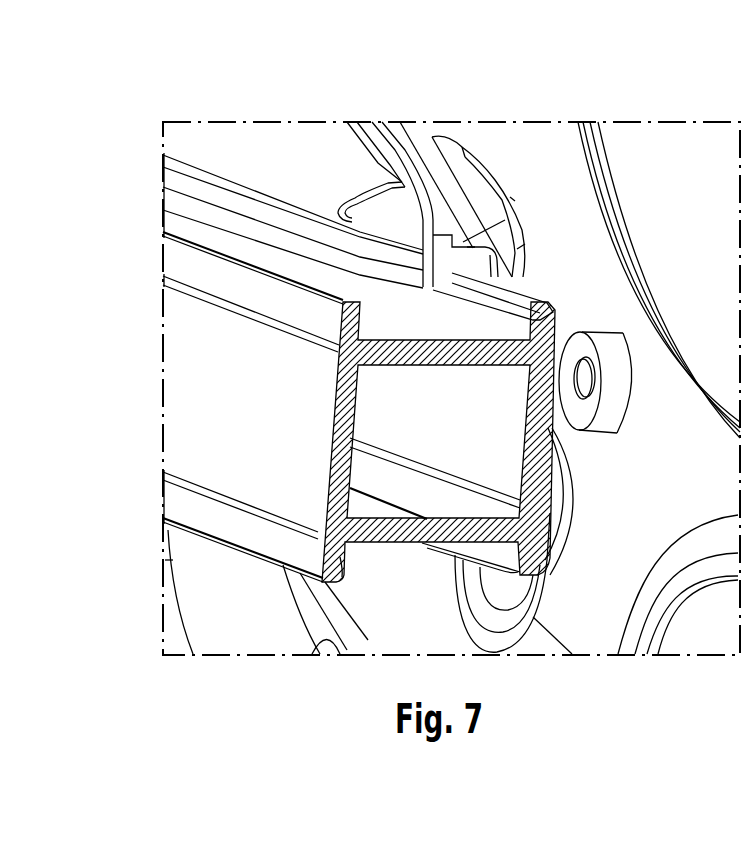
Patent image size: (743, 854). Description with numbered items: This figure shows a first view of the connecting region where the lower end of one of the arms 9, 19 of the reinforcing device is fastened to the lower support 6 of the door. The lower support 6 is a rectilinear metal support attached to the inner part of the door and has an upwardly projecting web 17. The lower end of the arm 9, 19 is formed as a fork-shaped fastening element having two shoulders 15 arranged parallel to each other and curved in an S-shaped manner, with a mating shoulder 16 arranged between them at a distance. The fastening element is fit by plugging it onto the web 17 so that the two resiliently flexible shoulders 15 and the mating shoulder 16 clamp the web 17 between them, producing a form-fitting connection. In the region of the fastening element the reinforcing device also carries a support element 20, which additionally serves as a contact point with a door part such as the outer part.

The lower support 6 is at (186, 432).
The arm 9 is at (418, 138).
The arm 19 is at (472, 207).
The shoulder 15 is at (512, 272).
The mating shoulder 16 is at (447, 283).
The web 17 is at (527, 295).
The support element 20 is at (358, 195).